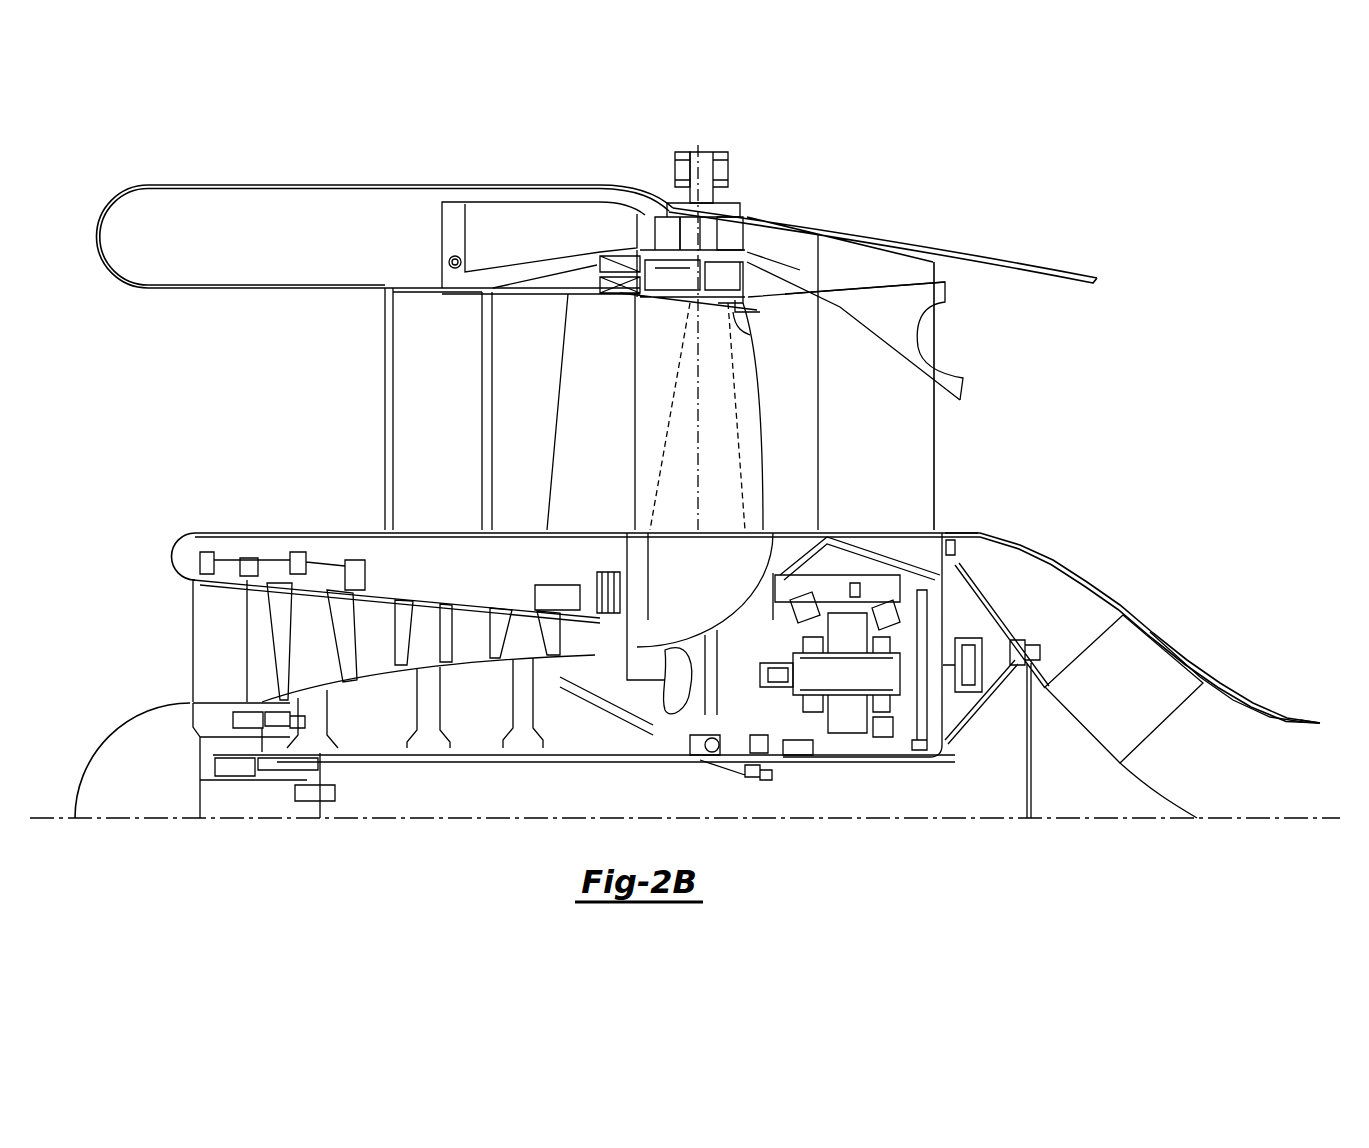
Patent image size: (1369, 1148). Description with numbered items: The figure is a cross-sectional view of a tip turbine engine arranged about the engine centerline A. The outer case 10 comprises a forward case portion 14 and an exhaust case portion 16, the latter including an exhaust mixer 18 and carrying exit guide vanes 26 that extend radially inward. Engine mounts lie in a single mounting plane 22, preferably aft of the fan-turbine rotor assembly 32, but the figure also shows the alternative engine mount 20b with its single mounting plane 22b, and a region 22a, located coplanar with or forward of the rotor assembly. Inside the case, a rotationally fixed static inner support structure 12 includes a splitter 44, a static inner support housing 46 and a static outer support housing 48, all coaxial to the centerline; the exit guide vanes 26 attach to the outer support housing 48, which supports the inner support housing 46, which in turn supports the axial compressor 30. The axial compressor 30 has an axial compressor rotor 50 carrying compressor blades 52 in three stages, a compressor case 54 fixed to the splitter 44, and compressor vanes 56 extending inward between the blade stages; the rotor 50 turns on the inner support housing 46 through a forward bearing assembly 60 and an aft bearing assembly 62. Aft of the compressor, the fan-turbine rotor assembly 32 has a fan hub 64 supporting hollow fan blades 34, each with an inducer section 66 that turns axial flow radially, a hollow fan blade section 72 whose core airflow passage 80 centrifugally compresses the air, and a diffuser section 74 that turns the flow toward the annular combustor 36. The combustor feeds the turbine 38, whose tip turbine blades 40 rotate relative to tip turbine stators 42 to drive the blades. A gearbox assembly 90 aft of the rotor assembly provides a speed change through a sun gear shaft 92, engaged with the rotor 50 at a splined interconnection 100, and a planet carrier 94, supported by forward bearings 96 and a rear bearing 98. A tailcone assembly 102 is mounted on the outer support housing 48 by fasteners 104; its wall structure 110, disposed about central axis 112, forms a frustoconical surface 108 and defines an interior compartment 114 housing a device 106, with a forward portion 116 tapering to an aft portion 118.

The outer case 10 is at (455, 172).
The static inner support structure 12 is at (175, 518).
The forward case portion 14 is at (538, 186).
The exhaust case portion 16 is at (907, 246).
The exhaust mixer 18 is at (922, 283).
The engine mount 20b is at (694, 148).
The single mounting plane 22 is at (422, 421).
The strut portion 22a is at (510, 421).
The single mounting plane 22b is at (714, 190).
The exit guide vanes 26 is at (935, 418).
The axial compressor 30 is at (168, 647).
The fan-turbine rotor assembly 32 is at (774, 438).
The hollow fan blades 34 is at (630, 500).
The annular combustor 36 is at (555, 200).
The turbine 38 is at (752, 243).
The tip turbine blades 40 is at (725, 238).
The tip turbine stators 42 is at (690, 228).
The splitter 44 is at (210, 533).
The static inner support housing 46 is at (422, 762).
The static outer support housing 48 is at (882, 528).
The axial compressor rotor 50 is at (630, 728).
The compressor blades 52 is at (345, 670).
The compressor case 54 is at (368, 590).
The compressor vanes 56 is at (553, 637).
The forward bearing assembly 60 is at (232, 775).
The aft bearing assembly 62 is at (717, 764).
The fan hub 64 is at (680, 700).
The inducer section 66 is at (635, 552).
The hollow fan blade section 72 is at (762, 460).
The diffuser section 74 is at (735, 315).
The core airflow passage 80 is at (650, 368).
The gearbox assembly 90 is at (860, 772).
The sun gear shaft 92 is at (795, 748).
The planet carrier 94 is at (770, 637).
The forward bearings 96 is at (805, 605).
The rear bearing 98 is at (880, 603).
The splined interconnection 100 is at (760, 742).
The tailcone assembly 102 is at (1127, 591).
The fasteners 104 is at (958, 548).
The device 106 is at (1172, 645).
The frustoconical surface 108 is at (1052, 556).
The wall structure 110 is at (1205, 662).
The central axis 112 is at (1090, 820).
The interior compartment 114 is at (1233, 697).
The forward portion 116 is at (978, 533).
The aft portion 118 is at (1270, 710).
The engine centerline A is at (128, 818).